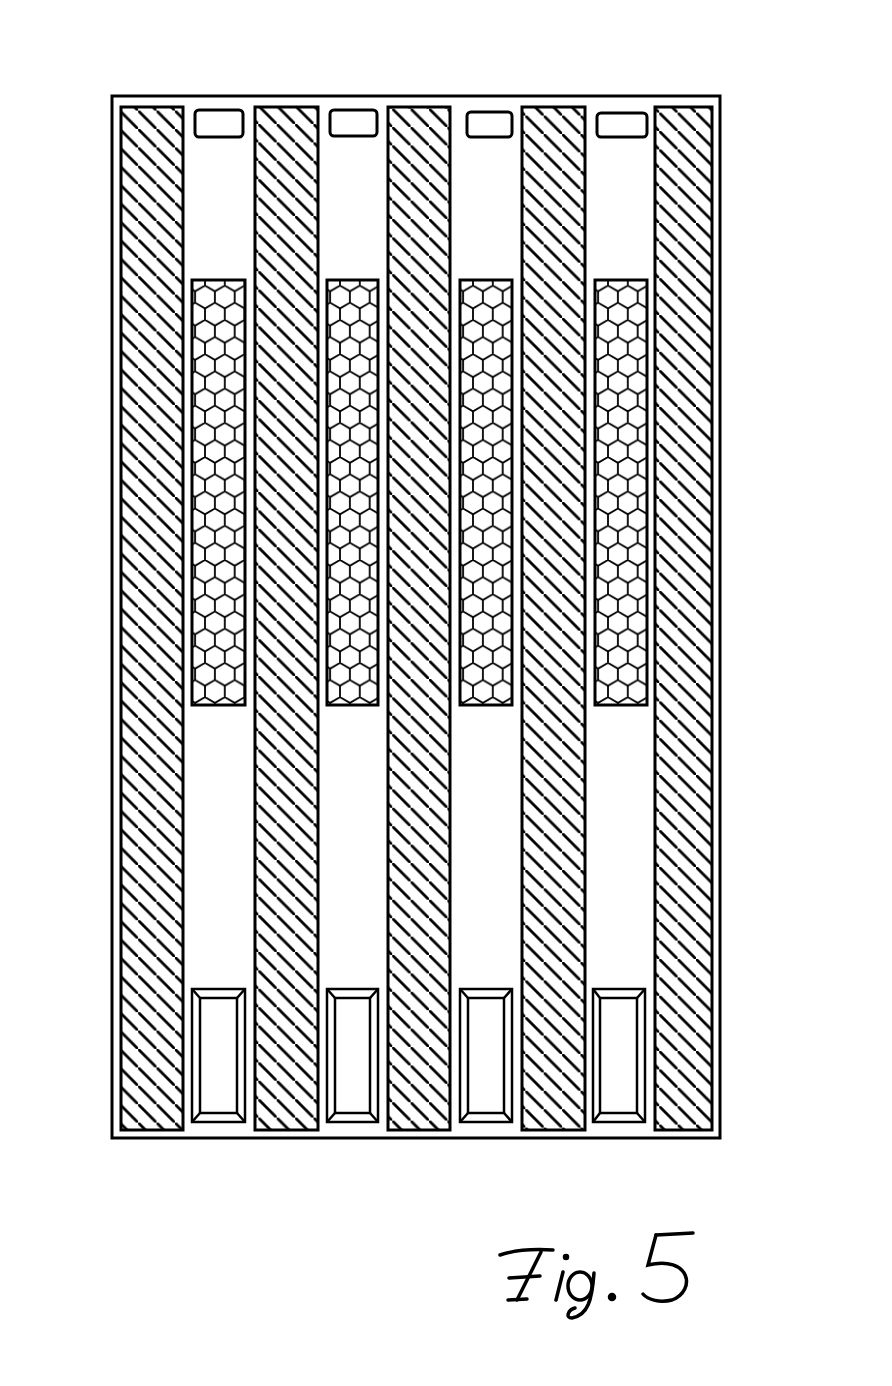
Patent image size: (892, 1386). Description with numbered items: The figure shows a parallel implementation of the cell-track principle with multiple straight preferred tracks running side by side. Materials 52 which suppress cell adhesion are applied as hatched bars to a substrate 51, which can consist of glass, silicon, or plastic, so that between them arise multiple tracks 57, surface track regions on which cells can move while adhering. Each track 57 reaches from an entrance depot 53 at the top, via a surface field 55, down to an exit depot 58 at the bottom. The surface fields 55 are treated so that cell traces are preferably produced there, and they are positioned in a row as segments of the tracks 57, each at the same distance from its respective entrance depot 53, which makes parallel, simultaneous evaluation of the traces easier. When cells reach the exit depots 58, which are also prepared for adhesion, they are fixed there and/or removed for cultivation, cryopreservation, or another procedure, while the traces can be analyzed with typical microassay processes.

The substrate 51 is at (620, 97).
The materials which suppress cell adhesion 52 is at (677, 132).
The entrance depot 53 is at (490, 118).
The surface field 55 is at (220, 692).
The track 57 is at (232, 916).
The exit depot 58 is at (620, 1102).